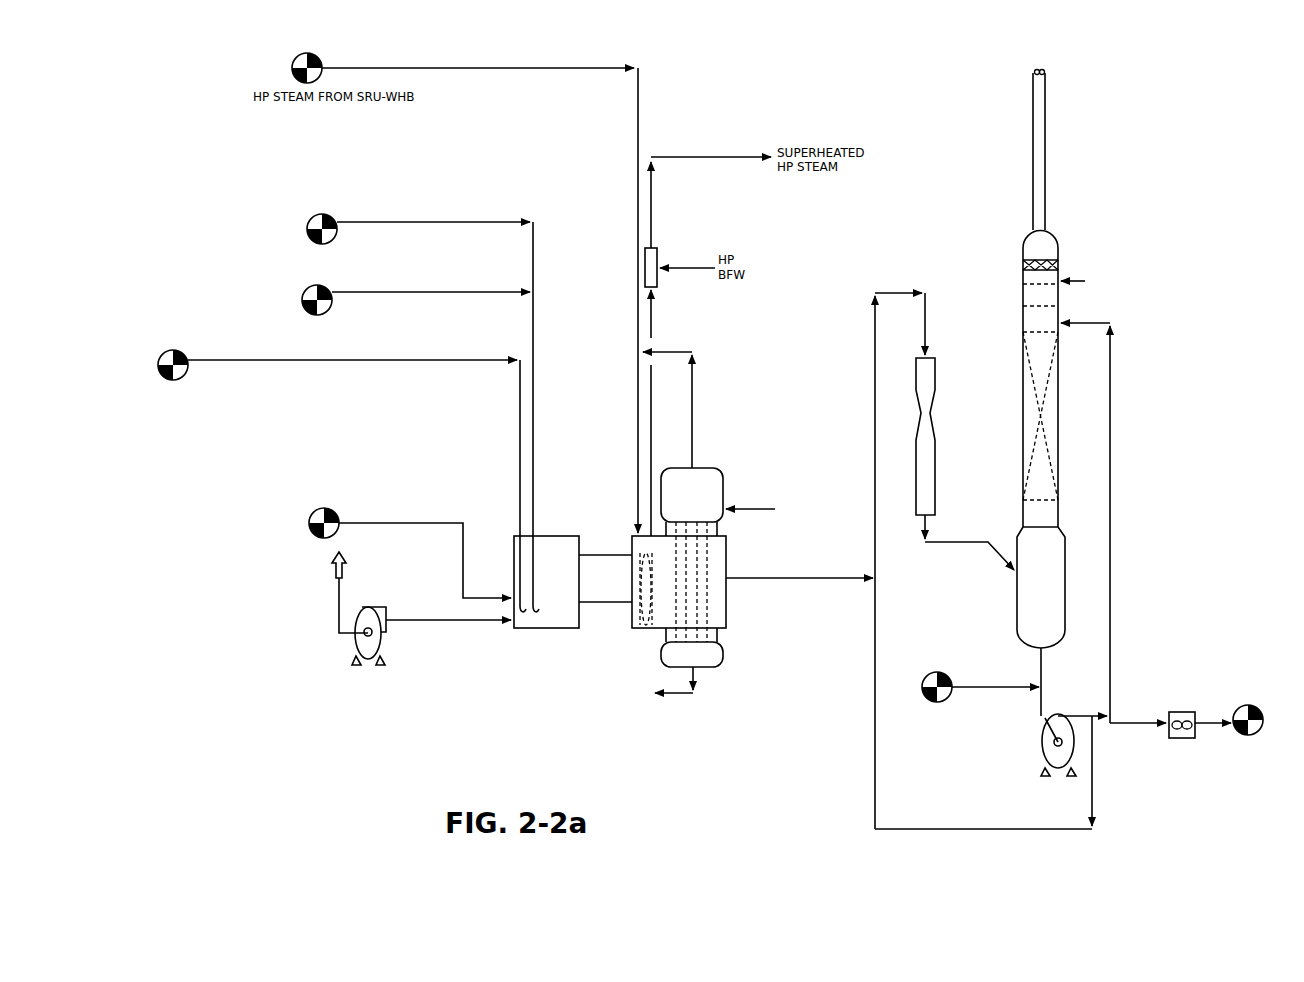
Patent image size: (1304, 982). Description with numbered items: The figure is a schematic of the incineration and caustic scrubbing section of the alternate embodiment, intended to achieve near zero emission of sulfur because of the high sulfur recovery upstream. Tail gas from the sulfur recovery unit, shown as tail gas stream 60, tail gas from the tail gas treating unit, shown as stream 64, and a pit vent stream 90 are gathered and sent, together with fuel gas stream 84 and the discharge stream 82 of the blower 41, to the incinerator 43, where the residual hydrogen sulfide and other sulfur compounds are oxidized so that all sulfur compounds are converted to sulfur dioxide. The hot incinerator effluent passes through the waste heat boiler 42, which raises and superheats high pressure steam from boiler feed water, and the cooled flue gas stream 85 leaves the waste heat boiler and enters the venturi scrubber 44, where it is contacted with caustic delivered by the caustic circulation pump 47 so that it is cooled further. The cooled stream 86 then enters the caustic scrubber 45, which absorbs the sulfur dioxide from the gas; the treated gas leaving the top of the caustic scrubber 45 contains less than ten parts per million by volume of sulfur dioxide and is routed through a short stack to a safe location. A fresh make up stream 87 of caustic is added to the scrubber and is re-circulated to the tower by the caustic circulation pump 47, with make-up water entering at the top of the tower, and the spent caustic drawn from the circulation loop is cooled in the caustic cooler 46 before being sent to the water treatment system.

The tail gas blower 41 is at (372, 595).
The waste heat boiler 42 is at (744, 538).
The thermal oxidizer / incinerator 43 is at (566, 525).
The venturi scrubber 44 is at (902, 424).
The caustic scrubber 45 is at (1070, 441).
The caustic cooler 46 is at (1175, 699).
The caustic circulation pump 47 is at (1036, 739).
The tail gas from SRU line 60 is at (398, 222).
The tail gas from TGU line 64 is at (453, 360).
The blower discharge line 82 is at (422, 614).
The fuel gas line 84 is at (380, 523).
The cooled flue gas line 85 is at (797, 578).
The quenched gas line to scrubber 86 is at (957, 542).
The fresh make up stream 87 is at (978, 687).
The pit vent line 90 is at (453, 292).